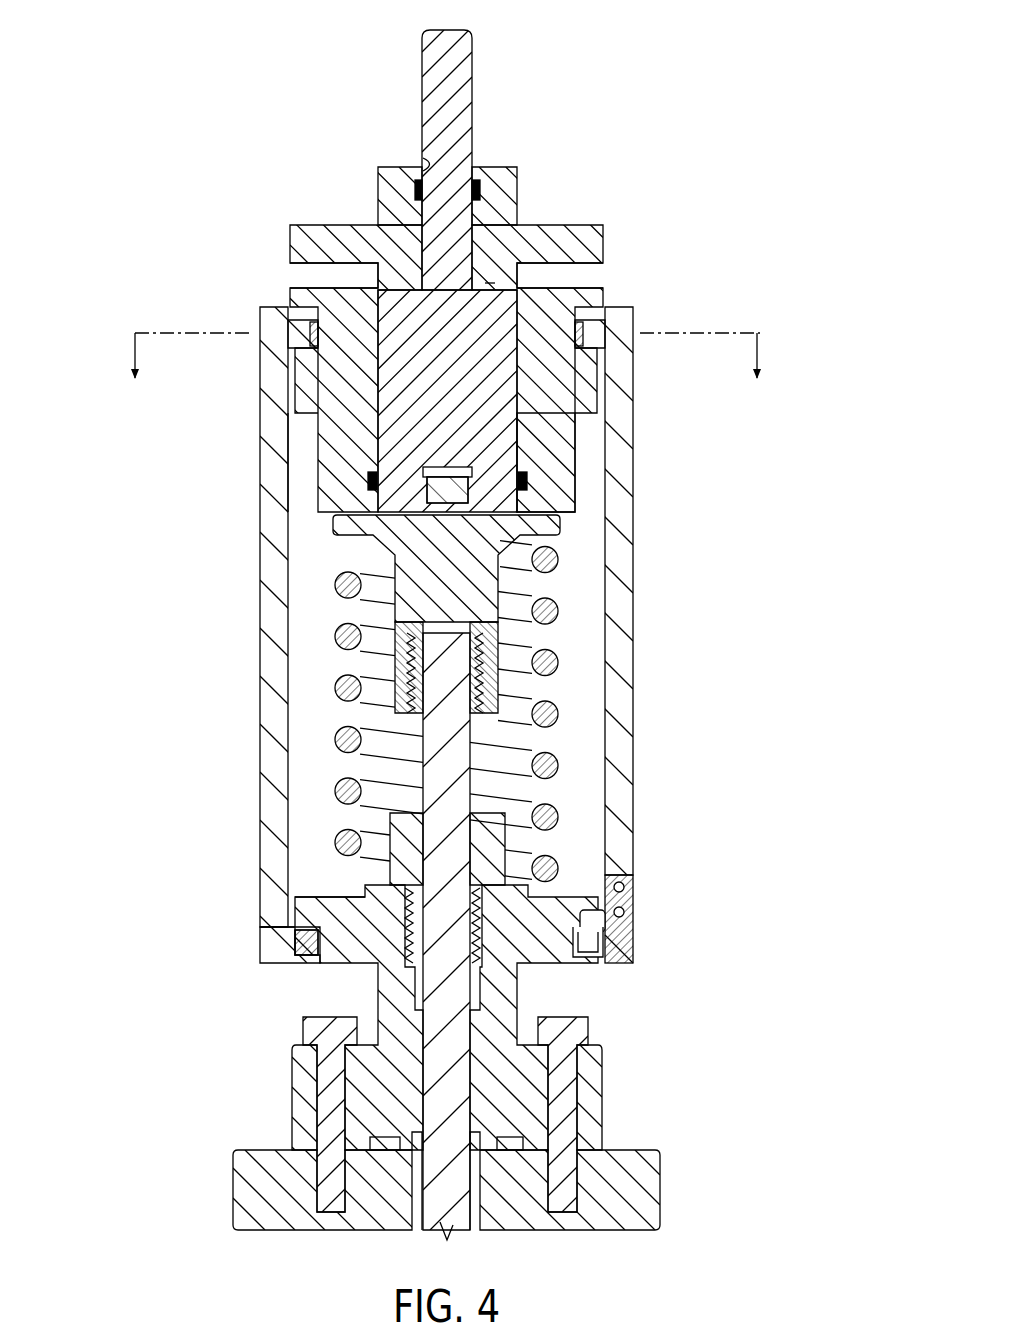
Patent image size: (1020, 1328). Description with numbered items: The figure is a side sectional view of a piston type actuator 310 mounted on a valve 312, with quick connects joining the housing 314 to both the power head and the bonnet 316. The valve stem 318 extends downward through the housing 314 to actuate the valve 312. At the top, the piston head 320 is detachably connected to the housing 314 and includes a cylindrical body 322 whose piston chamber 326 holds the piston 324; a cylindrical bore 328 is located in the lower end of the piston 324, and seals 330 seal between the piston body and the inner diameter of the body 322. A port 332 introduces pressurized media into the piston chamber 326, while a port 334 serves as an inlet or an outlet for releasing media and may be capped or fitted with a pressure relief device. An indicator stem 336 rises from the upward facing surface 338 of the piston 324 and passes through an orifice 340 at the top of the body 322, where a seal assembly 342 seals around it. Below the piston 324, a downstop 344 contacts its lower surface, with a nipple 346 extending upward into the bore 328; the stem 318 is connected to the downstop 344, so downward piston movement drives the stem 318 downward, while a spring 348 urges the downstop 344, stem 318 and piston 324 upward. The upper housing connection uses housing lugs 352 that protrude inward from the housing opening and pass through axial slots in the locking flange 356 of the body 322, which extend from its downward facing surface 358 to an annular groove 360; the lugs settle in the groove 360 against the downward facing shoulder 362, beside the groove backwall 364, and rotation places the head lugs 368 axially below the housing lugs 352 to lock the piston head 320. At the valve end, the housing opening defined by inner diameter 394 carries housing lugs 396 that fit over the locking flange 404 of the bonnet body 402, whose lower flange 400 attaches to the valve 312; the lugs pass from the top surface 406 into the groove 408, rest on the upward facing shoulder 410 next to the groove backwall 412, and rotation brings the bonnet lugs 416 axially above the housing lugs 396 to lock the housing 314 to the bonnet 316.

The actuator 310 is at (699, 70).
The valve 312 is at (660, 1170).
The housing 314 is at (633, 580).
The bonnet 316 is at (627, 1102).
The valve stem 318 is at (440, 780).
The piston head 320 is at (160, 210).
The cylindrical body 322 is at (570, 487).
The piston 324 is at (427, 308).
The piston chamber 326 is at (517, 437).
The cylindrical bore 328 is at (517, 448).
The seals 330 is at (430, 483).
The port 332 is at (303, 278).
The port 334 is at (590, 277).
The indicator stem 336 is at (421, 62).
The upward facing surface 338 is at (490, 280).
The orifice 340 is at (433, 165).
The seal assembly 342 is at (415, 190).
The downstop 344 is at (415, 608).
The nipple 346 is at (373, 477).
The spring 348 is at (395, 645).
The housing lugs 352 is at (612, 343).
The locking flange 356 is at (590, 392).
The downward facing surface 358 is at (300, 440).
The groove 360 is at (262, 345).
The downward facing shoulder 362 is at (600, 335).
The groove backwall 364 is at (303, 343).
The head lugs 368 is at (303, 378).
The inner diameter 394 is at (593, 962).
The housing lugs 396 is at (623, 957).
The lower flange 400 is at (293, 1085).
The bonnet body 402 is at (378, 998).
The locking flange 404 is at (247, 918).
The top surface 406 is at (307, 896).
The groove 408 is at (290, 938).
The upward facing shoulder 410 is at (633, 932).
The groove backwall 412 is at (300, 948).
The bonnet lugs 416 is at (307, 905).